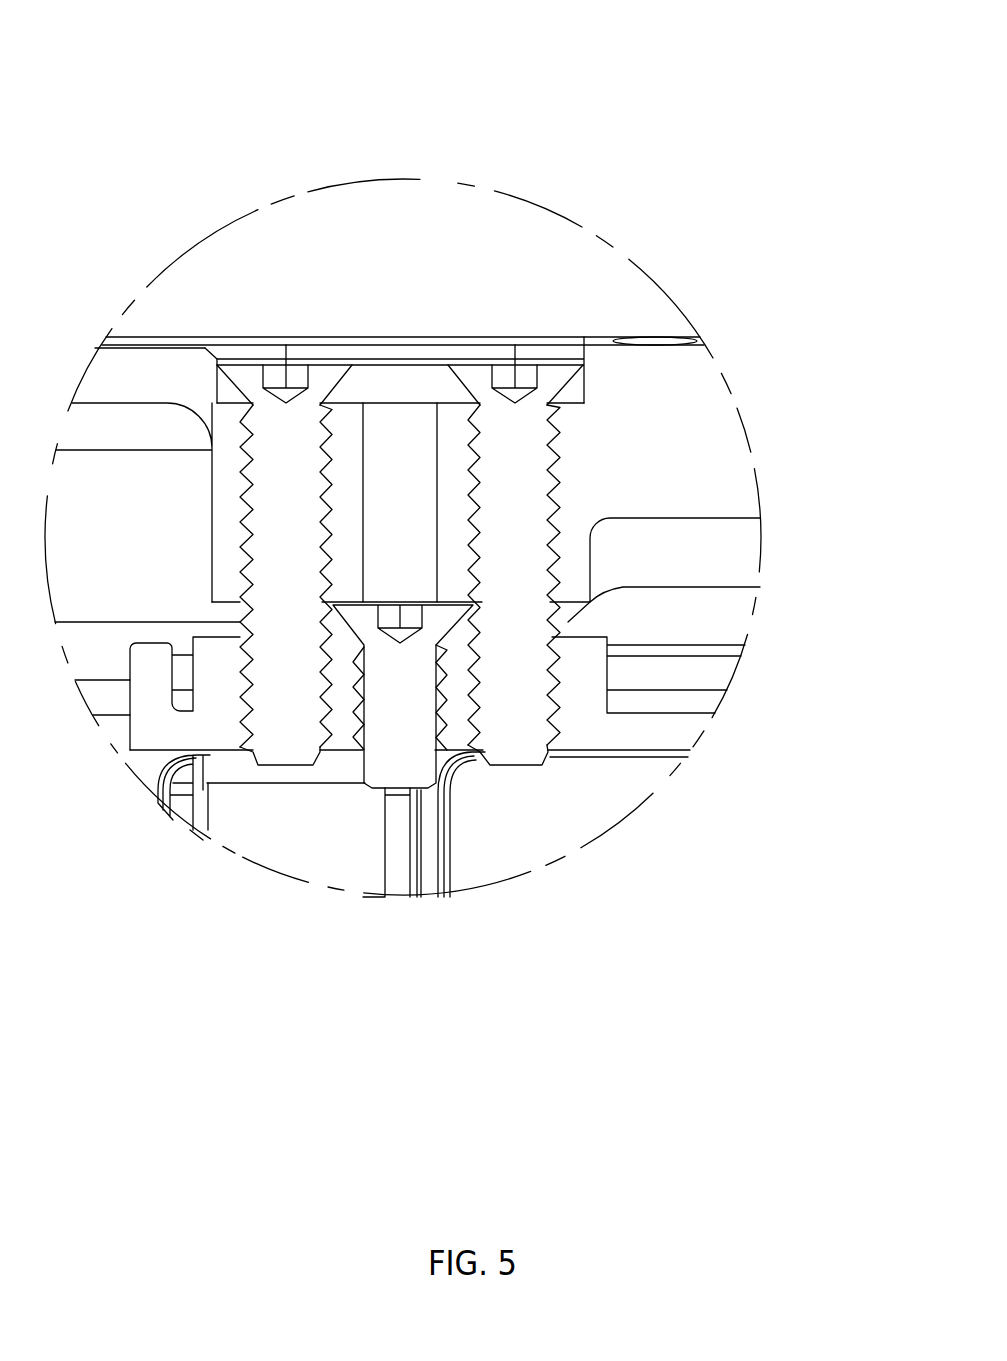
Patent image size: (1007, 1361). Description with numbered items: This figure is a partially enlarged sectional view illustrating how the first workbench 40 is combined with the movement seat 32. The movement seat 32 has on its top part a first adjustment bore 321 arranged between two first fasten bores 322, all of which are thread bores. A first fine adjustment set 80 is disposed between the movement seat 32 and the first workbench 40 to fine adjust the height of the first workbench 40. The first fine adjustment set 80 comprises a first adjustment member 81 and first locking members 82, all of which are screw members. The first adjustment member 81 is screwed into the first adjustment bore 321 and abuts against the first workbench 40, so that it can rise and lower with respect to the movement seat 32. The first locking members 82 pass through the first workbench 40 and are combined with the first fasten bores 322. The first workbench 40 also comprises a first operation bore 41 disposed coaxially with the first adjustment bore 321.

The first workbench 40 is at (408, 400).
The first operation bore 41 is at (410, 442).
The first fine adjustment set 80 is at (576, 566).
The first adjustment member 81 is at (407, 675).
The first locking member 82 is at (525, 502).
The movement seat 32 is at (302, 695).
The first adjustment bore 321 is at (357, 730).
The first fasten bore 322 is at (250, 737).